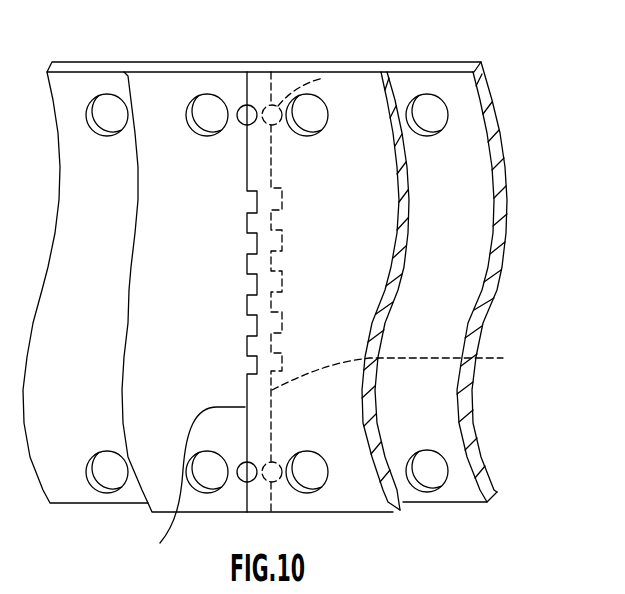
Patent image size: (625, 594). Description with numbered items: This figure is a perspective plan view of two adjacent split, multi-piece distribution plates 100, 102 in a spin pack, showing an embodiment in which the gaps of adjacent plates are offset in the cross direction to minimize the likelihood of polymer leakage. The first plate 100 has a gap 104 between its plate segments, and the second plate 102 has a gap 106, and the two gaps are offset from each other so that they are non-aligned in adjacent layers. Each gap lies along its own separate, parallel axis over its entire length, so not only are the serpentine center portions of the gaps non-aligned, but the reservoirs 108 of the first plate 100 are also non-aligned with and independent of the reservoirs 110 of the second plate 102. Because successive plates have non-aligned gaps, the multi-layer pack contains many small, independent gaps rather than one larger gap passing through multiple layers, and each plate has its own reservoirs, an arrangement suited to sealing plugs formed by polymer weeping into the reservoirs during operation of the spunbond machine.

The split, multi-piece distribution plate 100 is at (376, 510).
The split, multi-piece distribution plate 102 is at (475, 496).
The gap 104 is at (160, 543).
The gap 106 is at (402, 234).
The reservoirs 108 is at (240, 107).
The reservoirs 110 is at (323, 78).